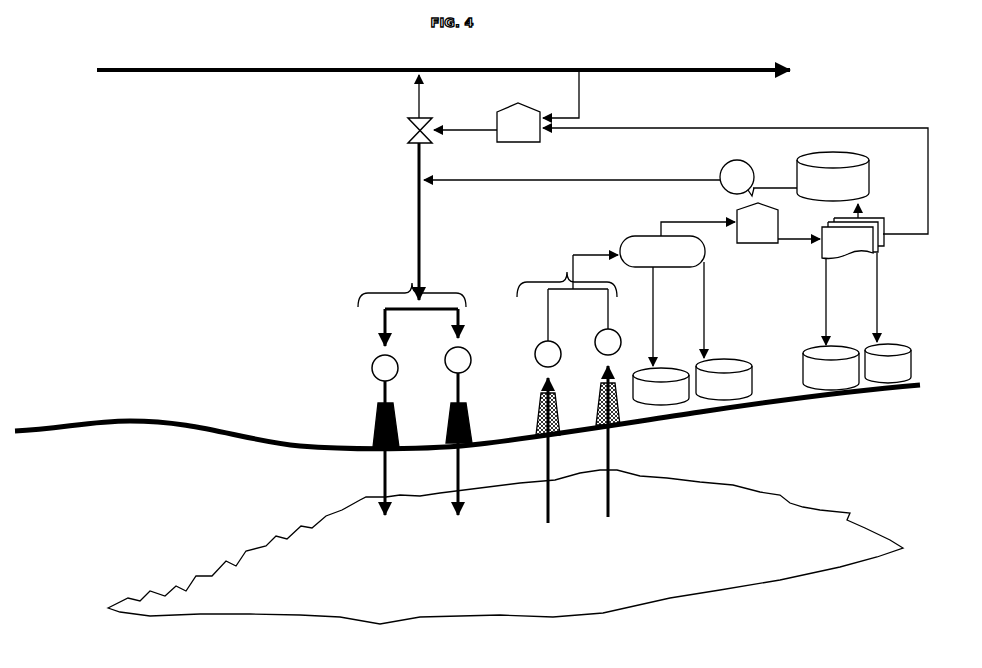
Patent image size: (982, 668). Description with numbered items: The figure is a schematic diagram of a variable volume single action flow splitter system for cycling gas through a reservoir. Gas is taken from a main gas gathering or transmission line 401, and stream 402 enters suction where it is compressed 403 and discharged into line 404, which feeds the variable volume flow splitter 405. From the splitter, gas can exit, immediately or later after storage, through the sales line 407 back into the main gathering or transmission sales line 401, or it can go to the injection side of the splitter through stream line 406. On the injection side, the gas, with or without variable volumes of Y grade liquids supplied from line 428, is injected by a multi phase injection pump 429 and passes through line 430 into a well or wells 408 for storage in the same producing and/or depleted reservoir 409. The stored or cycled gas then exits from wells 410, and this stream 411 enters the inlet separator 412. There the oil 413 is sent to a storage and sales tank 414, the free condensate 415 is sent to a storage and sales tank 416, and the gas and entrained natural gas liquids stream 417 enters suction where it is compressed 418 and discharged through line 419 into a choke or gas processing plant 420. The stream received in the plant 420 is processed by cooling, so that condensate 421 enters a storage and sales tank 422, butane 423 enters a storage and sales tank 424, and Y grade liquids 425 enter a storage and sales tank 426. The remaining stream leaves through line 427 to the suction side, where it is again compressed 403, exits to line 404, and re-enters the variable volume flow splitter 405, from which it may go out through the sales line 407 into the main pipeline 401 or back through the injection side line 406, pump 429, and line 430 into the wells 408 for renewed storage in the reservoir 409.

The main gas gathering or transmission line 401 is at (161, 80).
The stream 402 is at (587, 92).
The compressor 403 is at (518, 122).
The line 404 is at (472, 124).
The variable volume flow splitter 405 is at (409, 128).
The injection side stream line 406 is at (411, 158).
The sales line 407 is at (411, 100).
The well or wells 408 is at (415, 388).
The producing and or depleted reservoir 409 is at (820, 506).
The wells 410 is at (569, 386).
The stream 411 is at (590, 250).
The inlet separator 412 is at (662, 251).
The oil 413 is at (660, 296).
The storage and sales tank 414 is at (661, 386).
The free condensate 415 is at (715, 296).
The storage and sales tank 416 is at (724, 379).
The gas and entrained natural gas liquids stream 417 is at (689, 215).
The compressor 418 is at (757, 223).
The line 419 is at (795, 246).
The choke or gas processing plant 420 is at (853, 238).
The condensate 421 is at (831, 293).
The storage and sales tank 422 is at (831, 368).
The butane 423 is at (884, 293).
The storage and sales tank 424 is at (888, 363).
The Y grade liquids 425 is at (868, 212).
The storage and sales tank 426 is at (833, 176).
The line 427 is at (879, 124).
The line 428 is at (786, 182).
The multi phase injection pump 429 is at (737, 178).
The line 430 is at (651, 176).